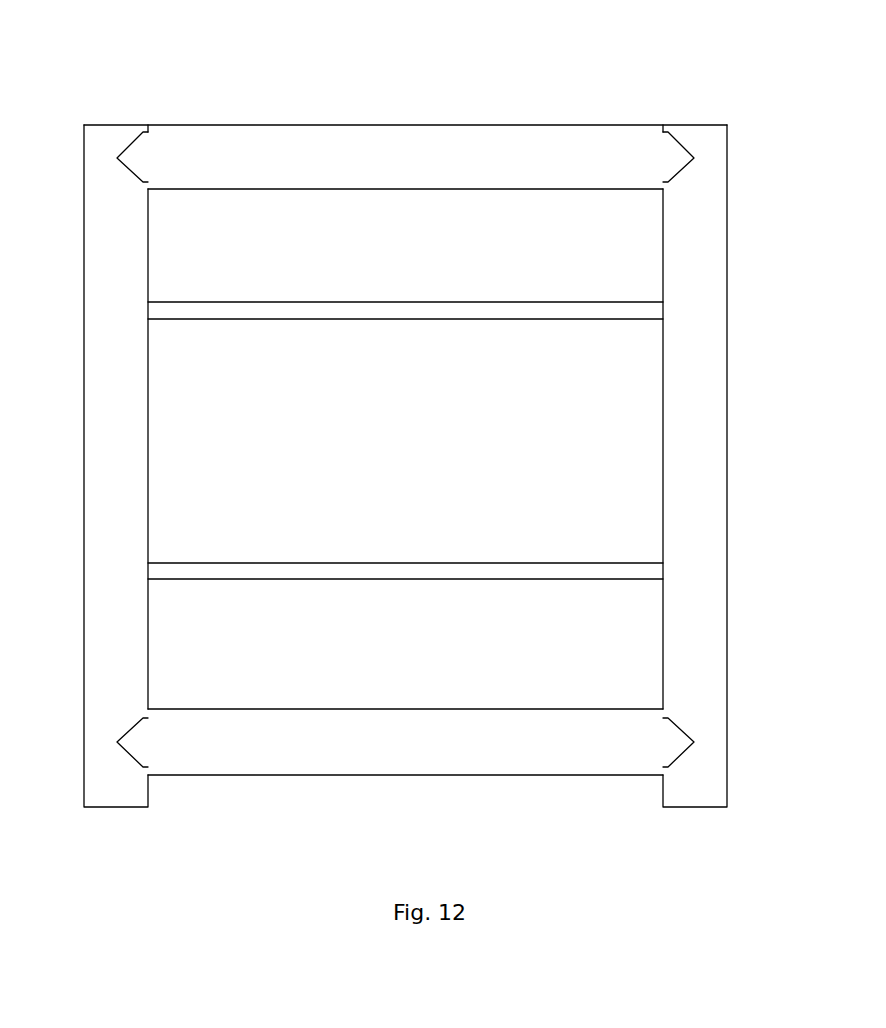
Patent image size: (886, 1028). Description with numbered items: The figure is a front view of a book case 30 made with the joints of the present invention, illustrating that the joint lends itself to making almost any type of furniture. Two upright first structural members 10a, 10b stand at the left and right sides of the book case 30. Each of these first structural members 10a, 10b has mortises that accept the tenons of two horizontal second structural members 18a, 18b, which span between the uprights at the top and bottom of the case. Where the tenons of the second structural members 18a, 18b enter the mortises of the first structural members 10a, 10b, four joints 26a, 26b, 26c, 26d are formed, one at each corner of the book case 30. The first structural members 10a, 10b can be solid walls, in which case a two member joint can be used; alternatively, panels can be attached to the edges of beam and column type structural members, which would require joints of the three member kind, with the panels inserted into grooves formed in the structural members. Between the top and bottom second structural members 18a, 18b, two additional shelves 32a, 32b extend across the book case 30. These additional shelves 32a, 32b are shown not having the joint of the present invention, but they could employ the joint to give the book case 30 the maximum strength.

The book case 30 is at (405, 62).
The first structural member 10a is at (108, 455).
The first structural member 10b is at (700, 475).
The second structural member 18a is at (575, 147).
The second structural member 18b is at (467, 752).
The joint 26a is at (103, 117).
The joint 26b is at (715, 118).
The joint 26c is at (164, 801).
The joint 26d is at (634, 799).
The additional shelf 32a is at (607, 310).
The additional shelf 32b is at (610, 573).